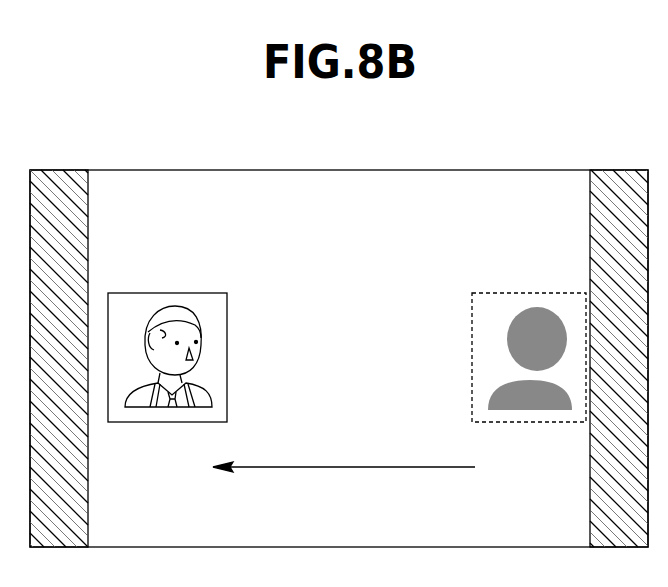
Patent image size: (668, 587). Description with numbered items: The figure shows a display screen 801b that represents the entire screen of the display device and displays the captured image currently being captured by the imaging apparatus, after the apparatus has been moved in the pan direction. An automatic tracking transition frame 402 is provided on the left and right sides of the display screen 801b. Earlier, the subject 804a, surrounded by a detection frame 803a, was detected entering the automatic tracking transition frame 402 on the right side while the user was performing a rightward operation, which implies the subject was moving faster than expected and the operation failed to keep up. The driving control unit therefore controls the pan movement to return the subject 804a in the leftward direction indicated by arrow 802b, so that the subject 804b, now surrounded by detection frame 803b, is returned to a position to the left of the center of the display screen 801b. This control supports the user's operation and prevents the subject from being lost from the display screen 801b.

The automatic tracking transition frame 402 is at (63, 170).
The display screen 801b is at (370, 170).
The arrow 802b is at (340, 470).
The detection frame 803b is at (227, 312).
The subject 804b is at (208, 385).
The detection frame 803a is at (471, 316).
The subject 804a is at (490, 393).